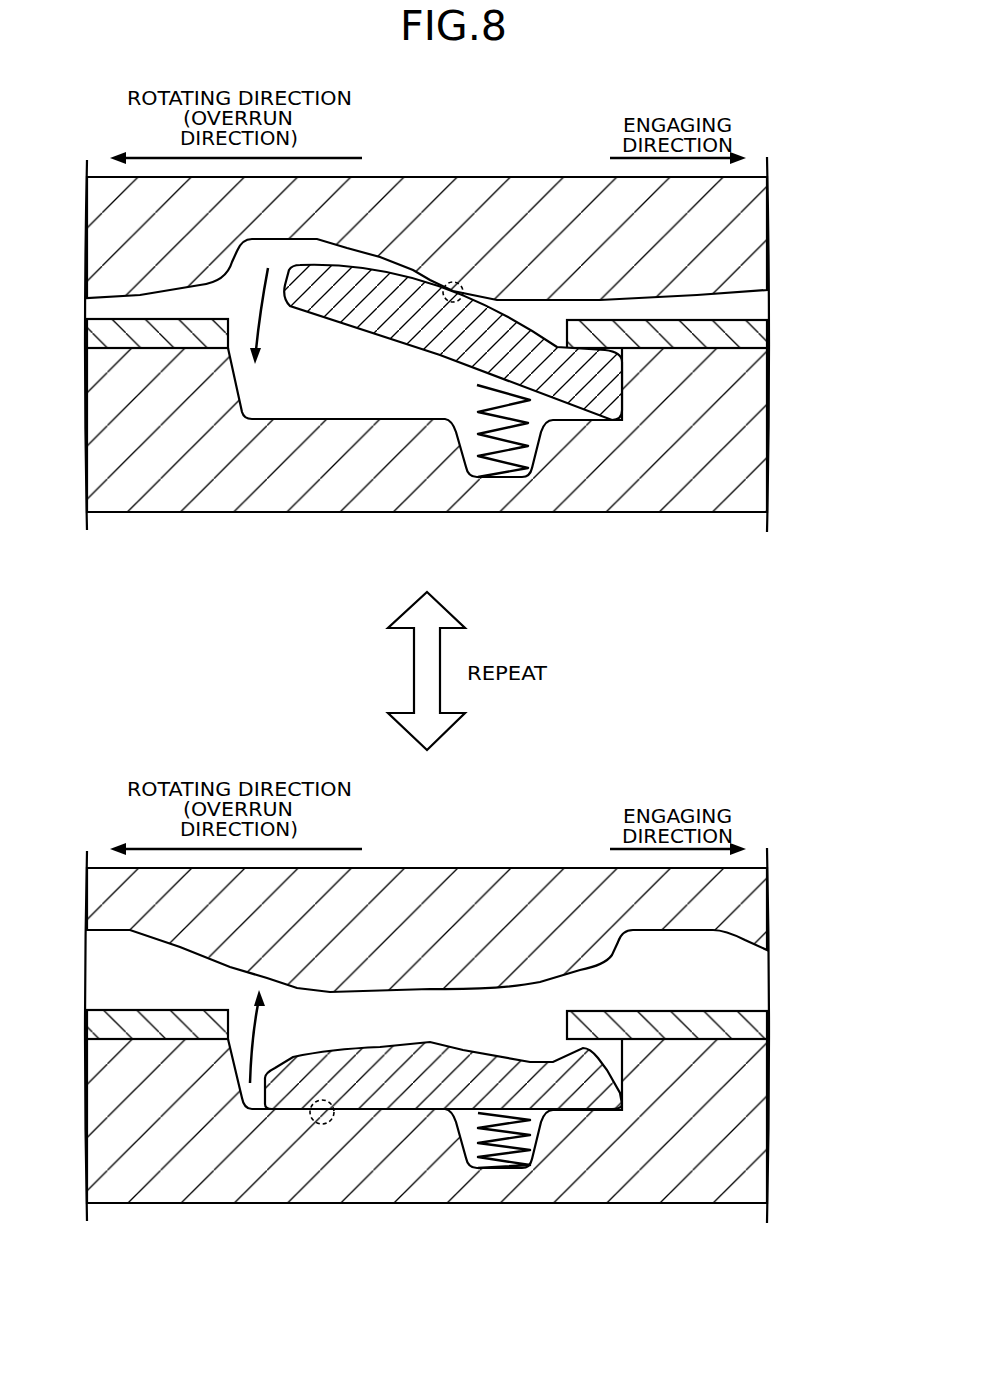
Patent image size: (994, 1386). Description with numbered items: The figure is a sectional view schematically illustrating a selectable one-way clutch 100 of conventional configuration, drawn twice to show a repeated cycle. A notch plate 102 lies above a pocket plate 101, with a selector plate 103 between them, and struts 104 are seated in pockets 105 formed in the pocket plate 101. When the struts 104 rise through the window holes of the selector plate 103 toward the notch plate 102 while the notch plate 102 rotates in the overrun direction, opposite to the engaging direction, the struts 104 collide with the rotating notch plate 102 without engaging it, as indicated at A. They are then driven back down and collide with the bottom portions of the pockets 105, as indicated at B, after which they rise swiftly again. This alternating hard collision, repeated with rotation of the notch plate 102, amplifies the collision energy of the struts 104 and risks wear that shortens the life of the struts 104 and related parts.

The selectable one-way clutch 100 is at (550, 137).
The pocket plate 101 is at (745, 436).
The notch plate 102 is at (743, 232).
The selector plate 103 is at (745, 330).
The struts 104 is at (372, 303).
The pockets 105 is at (312, 415).
The collision point with notch plate A is at (453, 282).
The collision point with pocket bottom B is at (322, 1124).